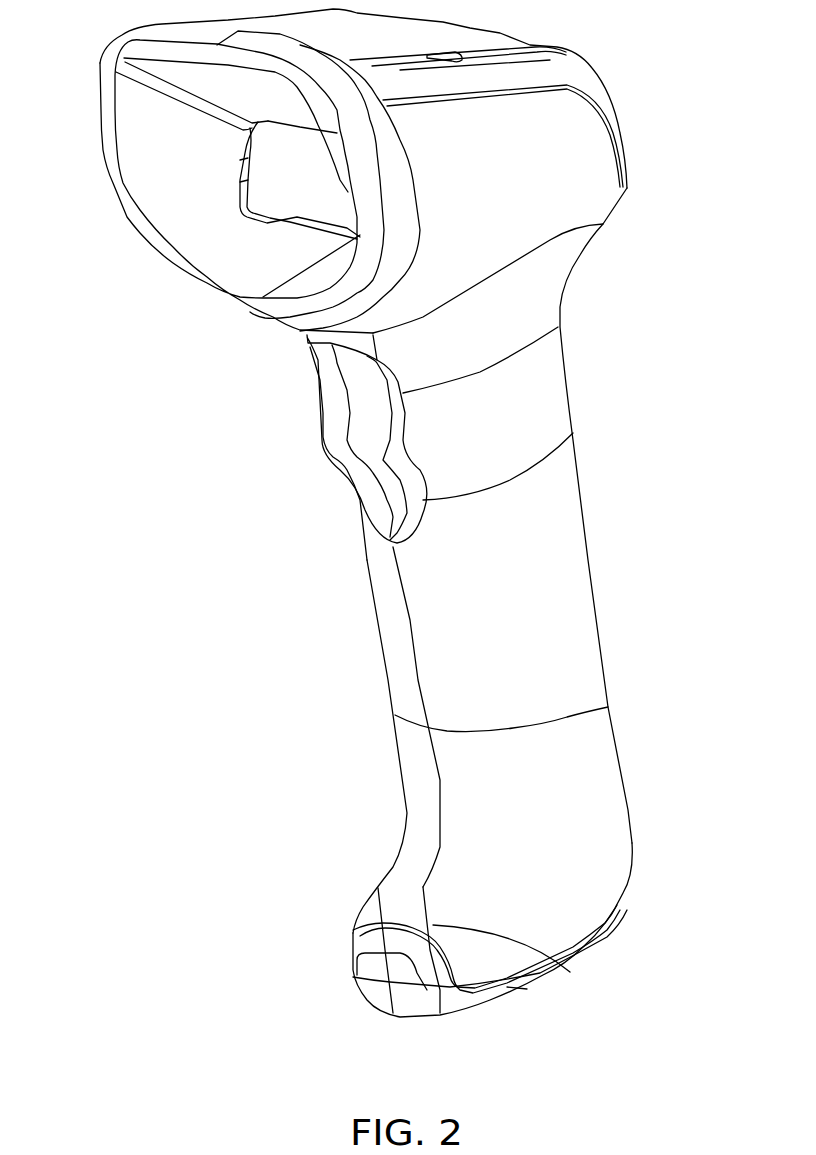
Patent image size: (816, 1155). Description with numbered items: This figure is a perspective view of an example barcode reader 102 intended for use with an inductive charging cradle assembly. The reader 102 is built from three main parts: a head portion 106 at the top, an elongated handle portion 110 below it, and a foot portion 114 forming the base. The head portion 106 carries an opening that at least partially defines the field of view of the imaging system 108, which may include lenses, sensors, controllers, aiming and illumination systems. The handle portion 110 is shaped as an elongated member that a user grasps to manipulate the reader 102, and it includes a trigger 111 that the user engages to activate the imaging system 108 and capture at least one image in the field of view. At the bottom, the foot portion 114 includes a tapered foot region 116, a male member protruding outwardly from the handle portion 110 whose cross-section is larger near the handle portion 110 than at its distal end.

The reader 102 is at (627, 187).
The head portion 106 is at (530, 120).
The imaging system 108 is at (290, 172).
The handle portion 110 is at (567, 520).
The trigger 111 is at (347, 413).
The foot portion 114 is at (570, 972).
The tapered foot region 116 is at (357, 867).